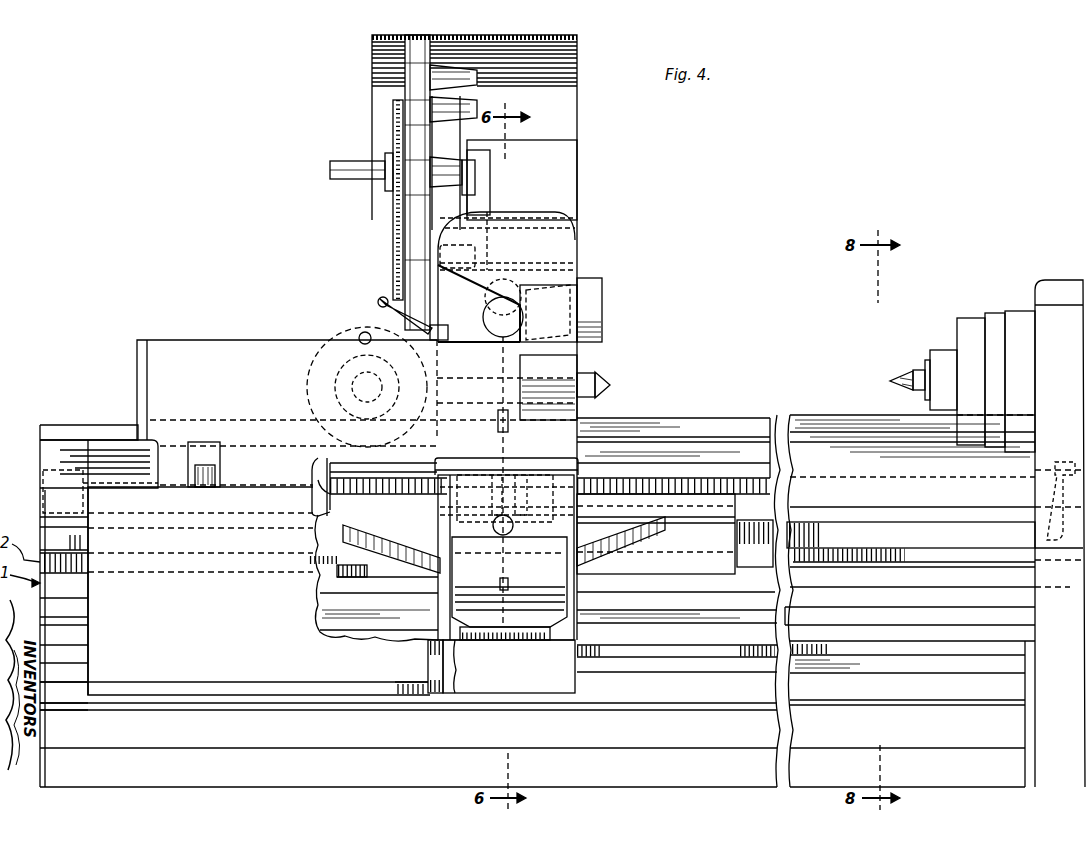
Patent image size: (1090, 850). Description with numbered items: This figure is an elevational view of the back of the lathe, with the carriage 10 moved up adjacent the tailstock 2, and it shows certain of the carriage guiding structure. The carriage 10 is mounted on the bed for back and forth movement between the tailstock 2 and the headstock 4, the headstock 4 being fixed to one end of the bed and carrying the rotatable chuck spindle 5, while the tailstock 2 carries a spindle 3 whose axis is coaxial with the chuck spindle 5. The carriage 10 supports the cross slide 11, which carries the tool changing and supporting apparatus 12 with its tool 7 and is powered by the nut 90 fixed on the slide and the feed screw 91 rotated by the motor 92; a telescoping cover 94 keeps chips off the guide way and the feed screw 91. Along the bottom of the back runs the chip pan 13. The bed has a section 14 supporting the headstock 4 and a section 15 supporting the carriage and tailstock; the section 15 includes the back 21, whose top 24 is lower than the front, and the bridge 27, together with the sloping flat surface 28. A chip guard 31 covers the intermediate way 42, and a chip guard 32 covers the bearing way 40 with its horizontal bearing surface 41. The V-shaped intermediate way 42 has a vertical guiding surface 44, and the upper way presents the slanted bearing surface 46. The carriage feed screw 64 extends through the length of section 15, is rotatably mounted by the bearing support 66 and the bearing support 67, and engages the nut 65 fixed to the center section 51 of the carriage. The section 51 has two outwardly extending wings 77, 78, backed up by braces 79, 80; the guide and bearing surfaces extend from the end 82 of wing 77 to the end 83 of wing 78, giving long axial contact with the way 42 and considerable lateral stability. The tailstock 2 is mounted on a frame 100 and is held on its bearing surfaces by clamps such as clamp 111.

The tailstock 2 is at (237, 340).
The spindle 3 is at (601, 382).
The headstock 4 is at (1050, 280).
The chuck spindle 5 is at (918, 368).
The spindle block 7 is at (603, 332).
The carriage 10 is at (560, 680).
The cross slide 11 is at (585, 414).
The tool changing and supporting apparatus 12 is at (560, 258).
The chip pan 13 is at (345, 778).
The bed section 14 is at (1059, 625).
The bed section 15 is at (890, 574).
The back 21 is at (907, 683).
The top of the back 24 is at (912, 633).
The bridge 27 is at (947, 558).
The flat surface 28 is at (924, 593).
The chip guard 31 is at (780, 445).
The chip guard 32 is at (640, 618).
The bearing way 40 is at (921, 650).
The bearing surface 41 is at (822, 645).
The intermediate way 42 is at (435, 497).
The guiding and bearing surface 44 is at (911, 535).
The bearing surface 46 is at (90, 428).
The center section 51 is at (550, 526).
The carriage feed screw 64 is at (680, 478).
The nut 65 is at (585, 482).
The bearing support 66 is at (44, 455).
The bearing support 67 is at (1066, 460).
The wing 77 is at (315, 478).
The wing 78 is at (705, 500).
The brace 79 is at (365, 553).
The brace 80 is at (643, 542).
The end of wing 82 is at (318, 548).
The end of wing 83 is at (737, 537).
The nut 90 is at (490, 502).
The feed screw 91 is at (503, 563).
The motor 92 is at (522, 615).
The telescoping cover 94 is at (548, 458).
The frame 100 is at (235, 591).
The clamp 111 is at (215, 690).